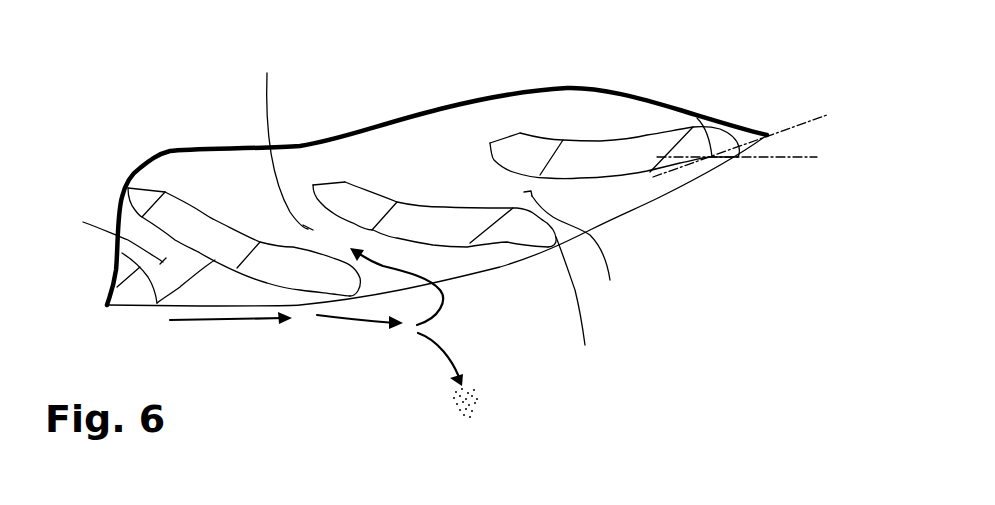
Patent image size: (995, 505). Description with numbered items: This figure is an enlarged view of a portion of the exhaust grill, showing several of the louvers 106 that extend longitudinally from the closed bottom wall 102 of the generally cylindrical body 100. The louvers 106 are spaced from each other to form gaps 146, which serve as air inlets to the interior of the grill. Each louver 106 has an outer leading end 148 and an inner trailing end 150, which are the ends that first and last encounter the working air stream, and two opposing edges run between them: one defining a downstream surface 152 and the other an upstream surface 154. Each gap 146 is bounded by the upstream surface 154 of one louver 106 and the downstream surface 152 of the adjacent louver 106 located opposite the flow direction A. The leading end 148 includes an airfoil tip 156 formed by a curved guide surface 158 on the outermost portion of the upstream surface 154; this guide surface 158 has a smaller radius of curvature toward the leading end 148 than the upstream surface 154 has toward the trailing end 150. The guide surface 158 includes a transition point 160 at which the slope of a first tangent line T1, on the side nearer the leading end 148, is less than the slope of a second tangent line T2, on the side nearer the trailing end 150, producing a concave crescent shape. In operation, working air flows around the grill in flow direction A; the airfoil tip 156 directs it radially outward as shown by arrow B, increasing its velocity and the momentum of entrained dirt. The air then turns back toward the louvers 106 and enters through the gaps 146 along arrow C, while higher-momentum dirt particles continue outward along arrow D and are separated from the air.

The generally cylindrical body 100 is at (660, 210).
The closed bottom wall 102 is at (415, 145).
The louver 106 is at (240, 220).
The gap 146 is at (335, 177).
The outer leading end 148 is at (147, 307).
The inner trailing end 150 is at (126, 184).
The downstream surface 152 is at (207, 210).
The upstream surface 154 is at (150, 297).
The airfoil tip 156 is at (542, 258).
The curved guide surface 158 is at (324, 294).
The transition point 160 is at (697, 118).
The first tangent line T1 is at (800, 160).
The second tangent line T2 is at (816, 115).
The flow direction arrow A is at (231, 330).
The outward radial flow arrow B is at (360, 328).
The inward flow arrow C is at (396, 286).
The dirt particle direction arrow D is at (448, 375).